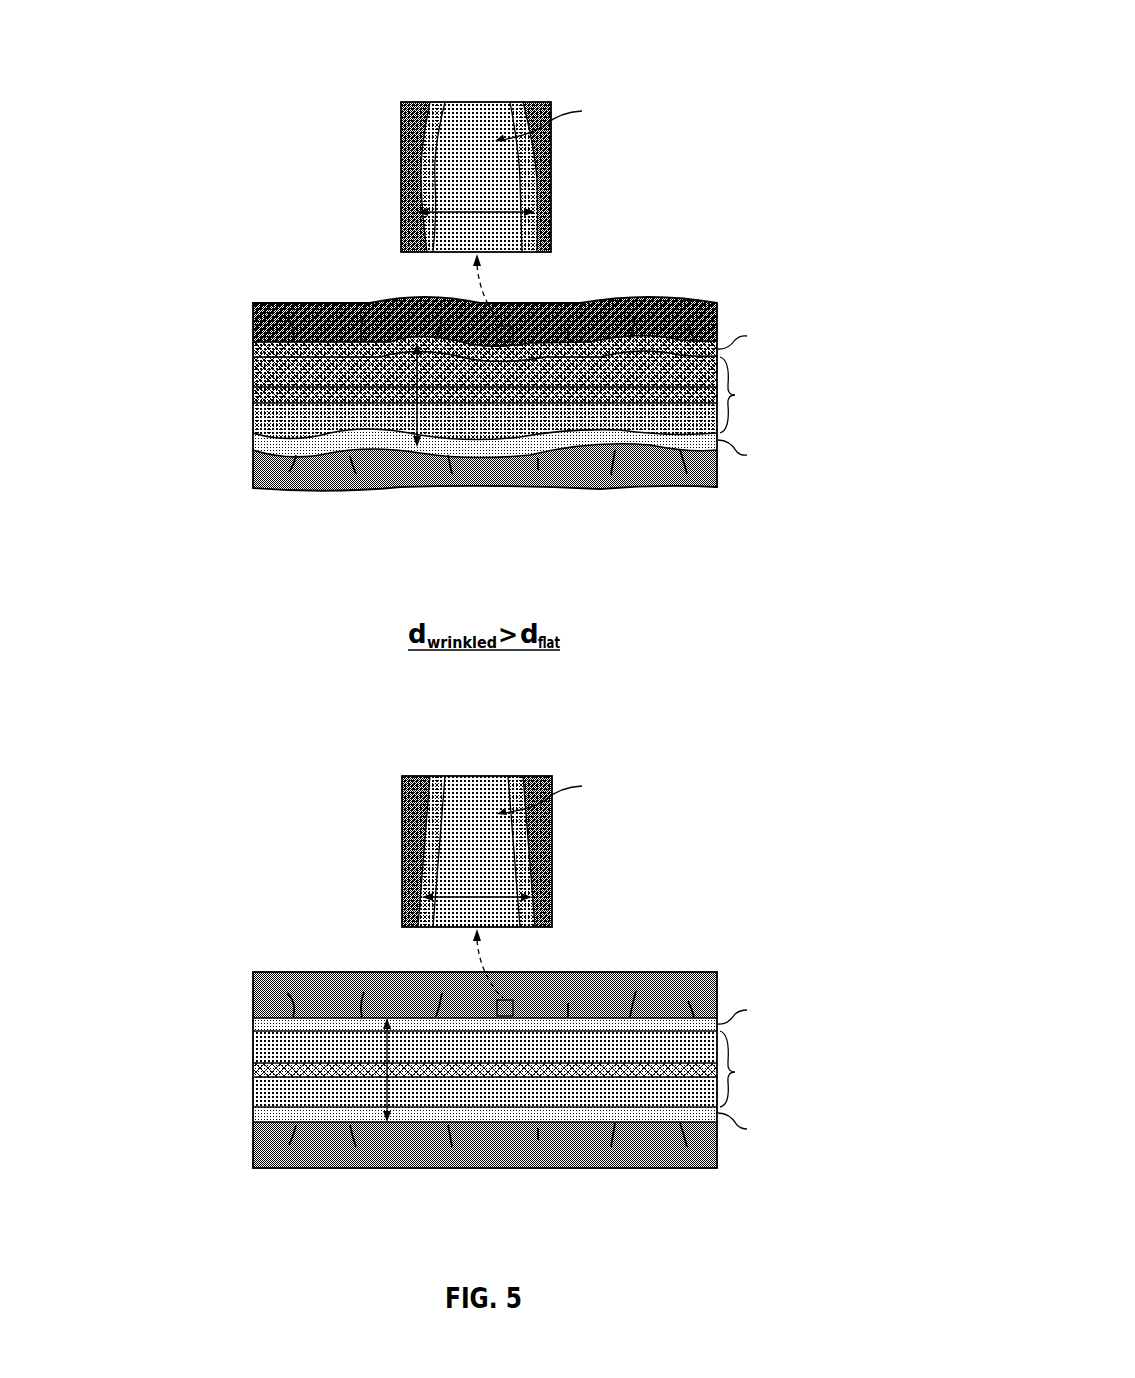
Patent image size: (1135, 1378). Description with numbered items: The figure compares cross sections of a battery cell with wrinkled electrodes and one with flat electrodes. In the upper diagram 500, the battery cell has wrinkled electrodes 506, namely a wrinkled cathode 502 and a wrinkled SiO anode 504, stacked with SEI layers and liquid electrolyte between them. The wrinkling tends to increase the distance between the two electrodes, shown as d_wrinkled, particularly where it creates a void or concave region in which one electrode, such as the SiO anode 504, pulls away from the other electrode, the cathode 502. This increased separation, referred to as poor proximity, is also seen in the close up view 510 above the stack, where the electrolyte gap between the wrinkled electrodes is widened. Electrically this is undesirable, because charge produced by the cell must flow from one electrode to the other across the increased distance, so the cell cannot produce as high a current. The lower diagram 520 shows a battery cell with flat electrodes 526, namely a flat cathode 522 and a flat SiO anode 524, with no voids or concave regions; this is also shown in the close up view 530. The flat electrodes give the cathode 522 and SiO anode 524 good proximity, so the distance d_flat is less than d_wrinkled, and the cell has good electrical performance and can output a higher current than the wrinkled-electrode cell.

The diagram 500 is at (726, 33).
The close up view 510 is at (476, 102).
The wrinkled electrodes 506 is at (253, 485).
The wrinkled cathode 502 is at (720, 304).
The wrinkled SiO anode 504 is at (719, 470).
The diagram 520 is at (767, 710).
The close up view 530 is at (476, 776).
The flat electrodes 526 is at (253, 1162).
The flat cathode 522 is at (721, 981).
The flat SiO anode 524 is at (719, 1148).